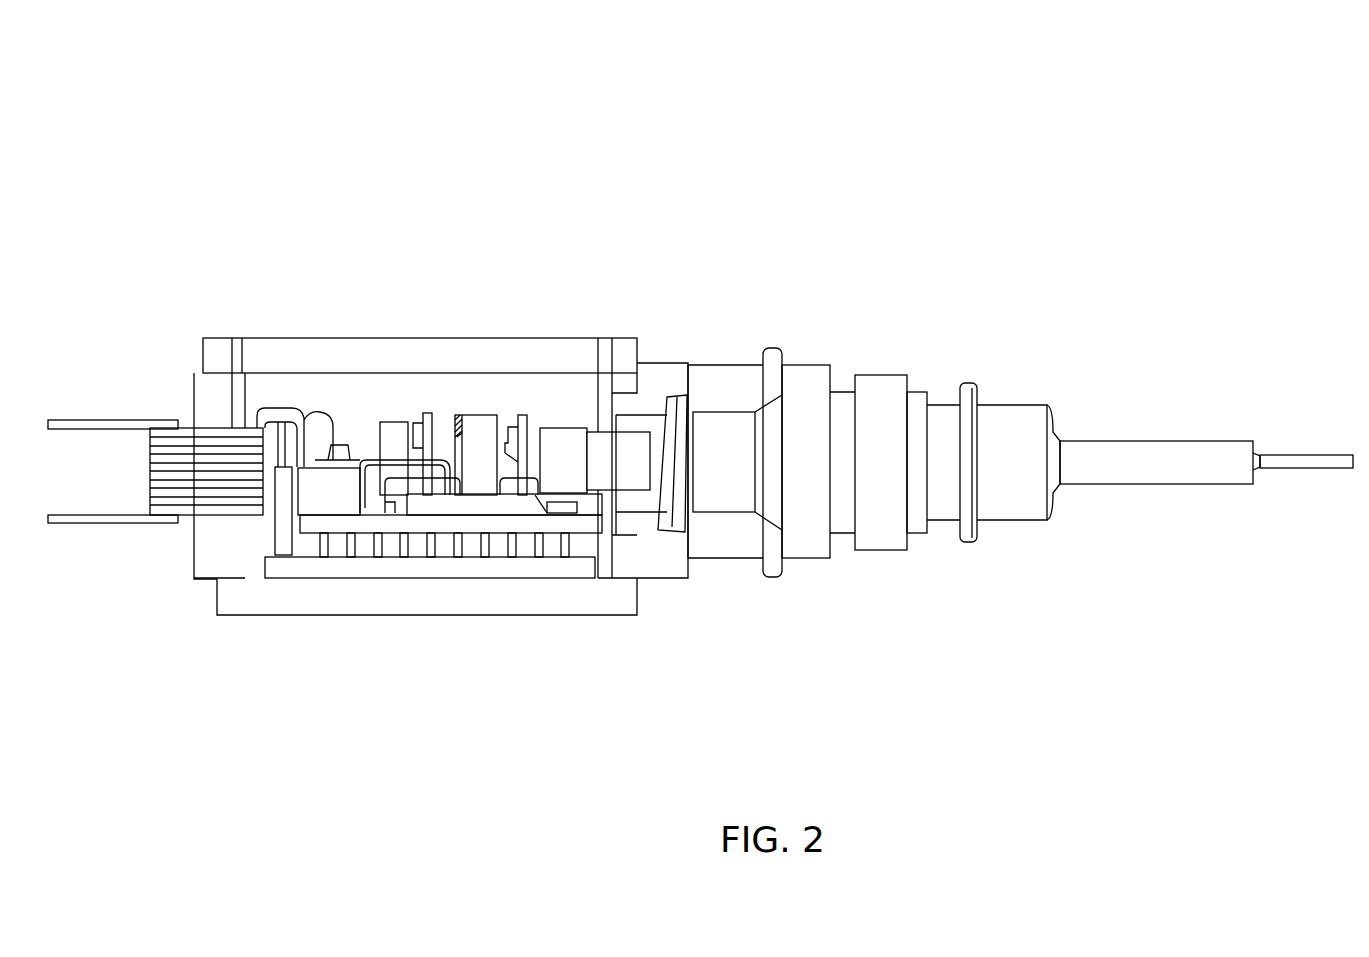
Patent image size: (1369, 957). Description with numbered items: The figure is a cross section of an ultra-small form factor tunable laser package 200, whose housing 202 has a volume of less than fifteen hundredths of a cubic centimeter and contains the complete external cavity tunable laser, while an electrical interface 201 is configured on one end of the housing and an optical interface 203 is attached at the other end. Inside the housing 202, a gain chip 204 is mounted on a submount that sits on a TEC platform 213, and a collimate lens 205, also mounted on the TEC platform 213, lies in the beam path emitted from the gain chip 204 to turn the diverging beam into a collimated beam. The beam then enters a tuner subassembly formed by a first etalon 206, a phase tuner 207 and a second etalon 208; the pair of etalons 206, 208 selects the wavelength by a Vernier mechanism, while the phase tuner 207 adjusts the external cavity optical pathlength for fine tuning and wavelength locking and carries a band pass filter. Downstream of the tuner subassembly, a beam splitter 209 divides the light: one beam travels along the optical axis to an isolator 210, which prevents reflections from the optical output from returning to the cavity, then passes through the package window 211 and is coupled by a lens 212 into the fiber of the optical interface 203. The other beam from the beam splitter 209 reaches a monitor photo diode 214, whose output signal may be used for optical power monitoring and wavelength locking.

The ultra-small form factor package 200 is at (183, 128).
The electrical interface 201 is at (78, 515).
The housing 202 is at (267, 338).
The optical interface 203 is at (1310, 470).
The gain chip 204 is at (345, 445).
The collimate lens 205 is at (400, 420).
The first etalon 206 is at (428, 412).
The phase tuner 207 is at (478, 412).
The second etalon 208 is at (520, 412).
The beam splitter 209 is at (562, 427).
The isolator 210 is at (615, 430).
The package window 211 is at (668, 397).
The lens 212 is at (733, 412).
The TEC platform 213 is at (447, 540).
The monitor photo diode 214 is at (562, 512).